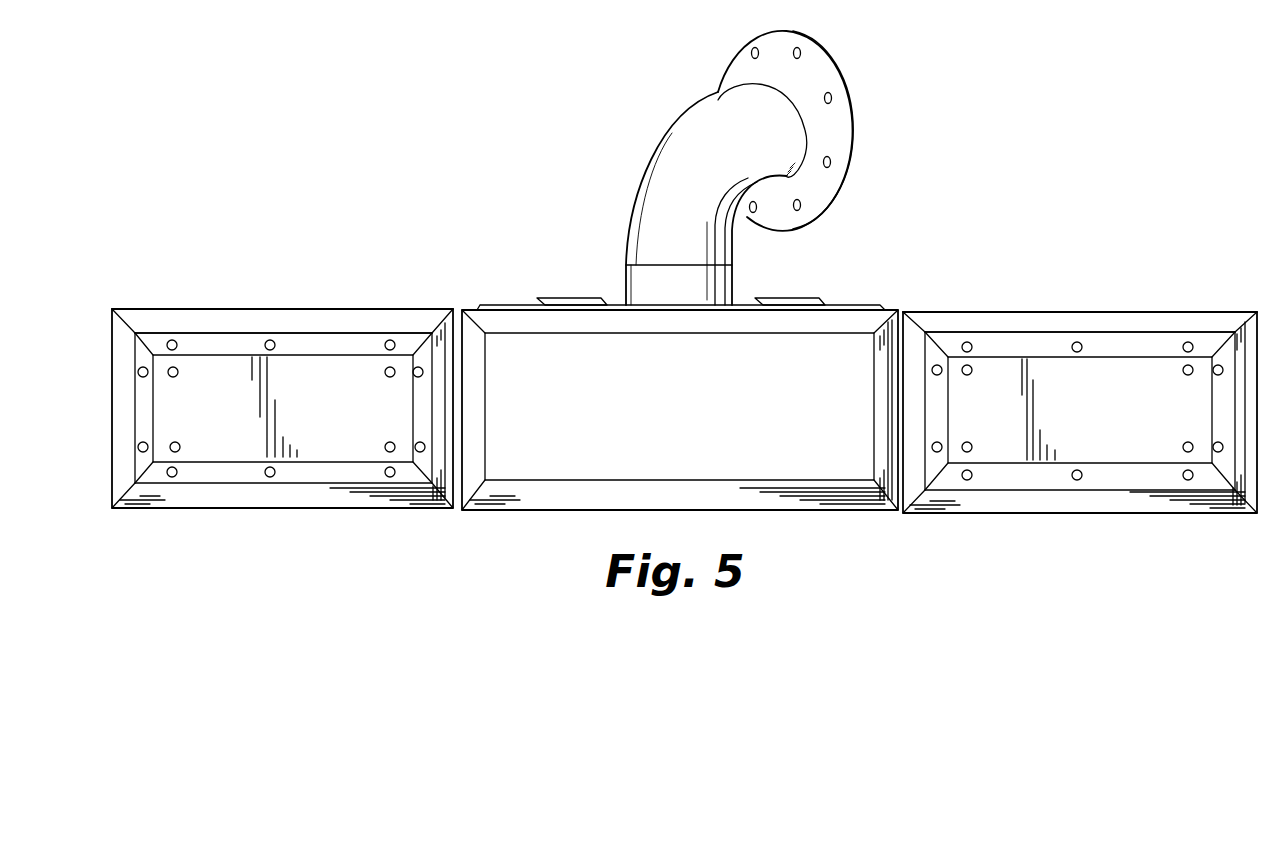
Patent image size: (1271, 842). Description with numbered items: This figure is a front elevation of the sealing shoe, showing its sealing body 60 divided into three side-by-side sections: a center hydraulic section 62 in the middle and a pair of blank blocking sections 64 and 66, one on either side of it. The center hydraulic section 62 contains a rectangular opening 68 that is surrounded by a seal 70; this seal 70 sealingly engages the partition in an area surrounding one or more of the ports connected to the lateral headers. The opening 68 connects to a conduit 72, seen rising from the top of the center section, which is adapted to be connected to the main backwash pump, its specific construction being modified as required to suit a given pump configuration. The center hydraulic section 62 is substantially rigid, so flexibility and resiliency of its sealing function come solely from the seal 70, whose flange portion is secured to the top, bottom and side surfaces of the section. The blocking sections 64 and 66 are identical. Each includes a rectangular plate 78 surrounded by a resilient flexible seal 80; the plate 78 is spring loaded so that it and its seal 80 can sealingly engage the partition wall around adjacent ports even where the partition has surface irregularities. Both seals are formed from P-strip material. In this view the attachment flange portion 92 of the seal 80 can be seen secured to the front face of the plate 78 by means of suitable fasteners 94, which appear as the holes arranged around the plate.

The sealing body 60 is at (1003, 311).
The center hydraulic section 62 is at (615, 304).
The blocking section 64 is at (259, 382).
The blocking section 66 is at (1080, 382).
The rectangular opening 68 is at (830, 352).
The seal 70 is at (669, 378).
The conduit 72 is at (690, 132).
The rectangular plate 78 is at (210, 365).
The resilient flexible seal 80 is at (373, 322).
The attachment flange portion 92 is at (342, 343).
The fasteners 94 is at (273, 352).